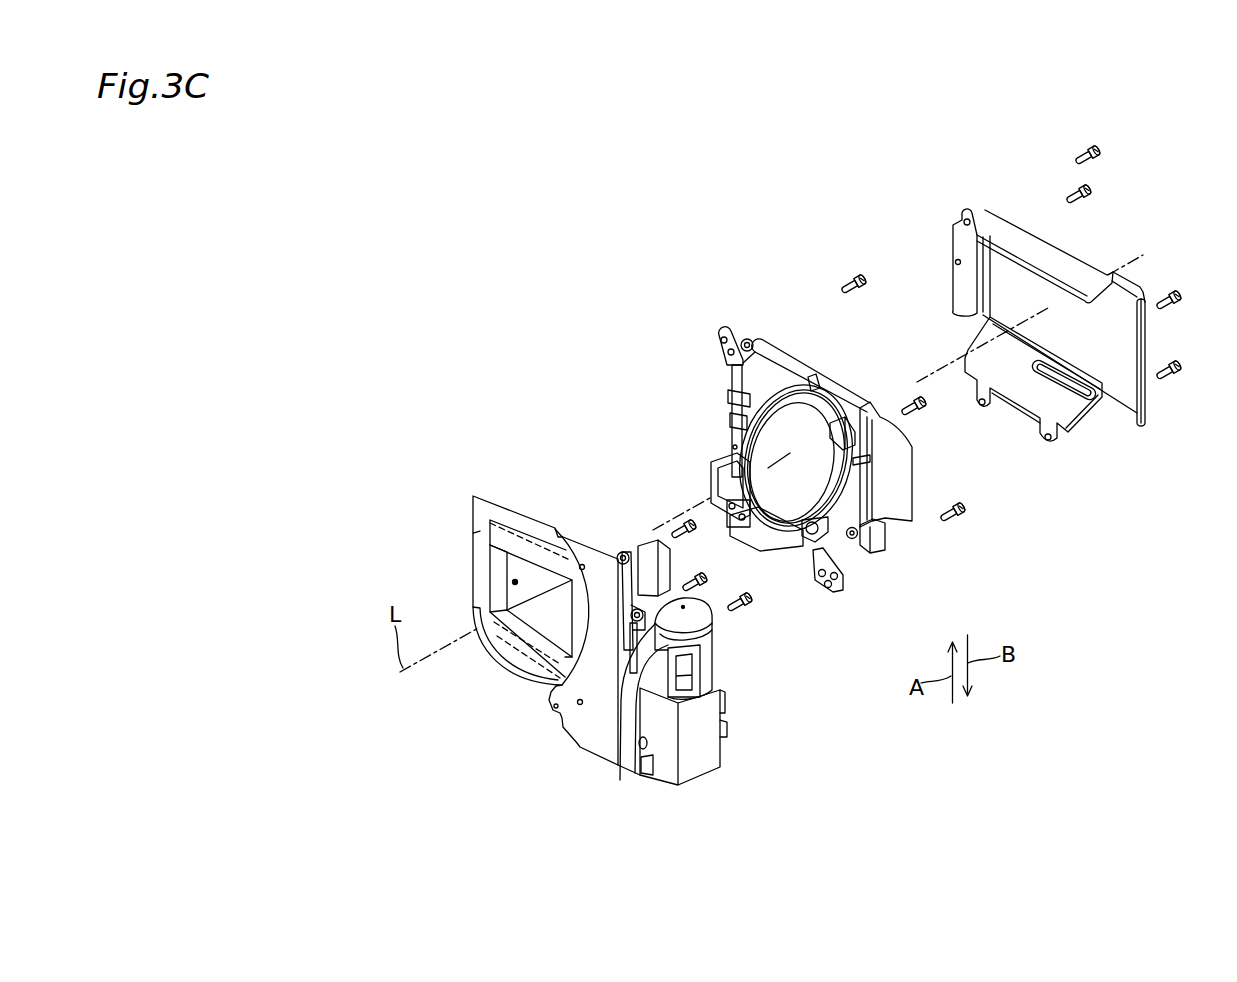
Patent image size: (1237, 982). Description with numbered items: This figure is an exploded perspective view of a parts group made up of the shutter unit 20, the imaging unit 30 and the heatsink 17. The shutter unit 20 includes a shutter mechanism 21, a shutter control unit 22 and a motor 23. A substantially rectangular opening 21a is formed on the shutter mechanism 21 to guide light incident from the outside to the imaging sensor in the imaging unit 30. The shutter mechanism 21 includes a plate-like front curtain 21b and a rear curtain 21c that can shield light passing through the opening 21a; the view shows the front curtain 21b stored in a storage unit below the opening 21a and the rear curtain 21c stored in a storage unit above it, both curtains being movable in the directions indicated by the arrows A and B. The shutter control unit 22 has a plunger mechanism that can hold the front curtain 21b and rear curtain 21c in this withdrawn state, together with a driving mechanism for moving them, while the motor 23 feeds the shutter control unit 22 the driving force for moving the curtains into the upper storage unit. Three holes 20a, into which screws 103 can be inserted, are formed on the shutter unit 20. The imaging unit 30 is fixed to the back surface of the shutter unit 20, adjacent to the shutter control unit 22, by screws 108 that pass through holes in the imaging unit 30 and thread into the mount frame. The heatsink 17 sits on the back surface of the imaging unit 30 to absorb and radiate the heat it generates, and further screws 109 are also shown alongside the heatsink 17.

The heatsink 17 is at (1147, 425).
The shutter unit 20 is at (712, 773).
The holes 20a is at (619, 551).
The shutter mechanism 21 is at (487, 500).
The opening 21a is at (512, 582).
The front curtain 21b is at (512, 689).
The rear curtain 21c is at (533, 516).
The shutter control unit 22 is at (644, 546).
The motor 23 is at (703, 616).
The imaging unit 30 is at (875, 535).
The screws 103 is at (694, 531).
The screws 108 is at (865, 288).
The screws 109 is at (1098, 156).